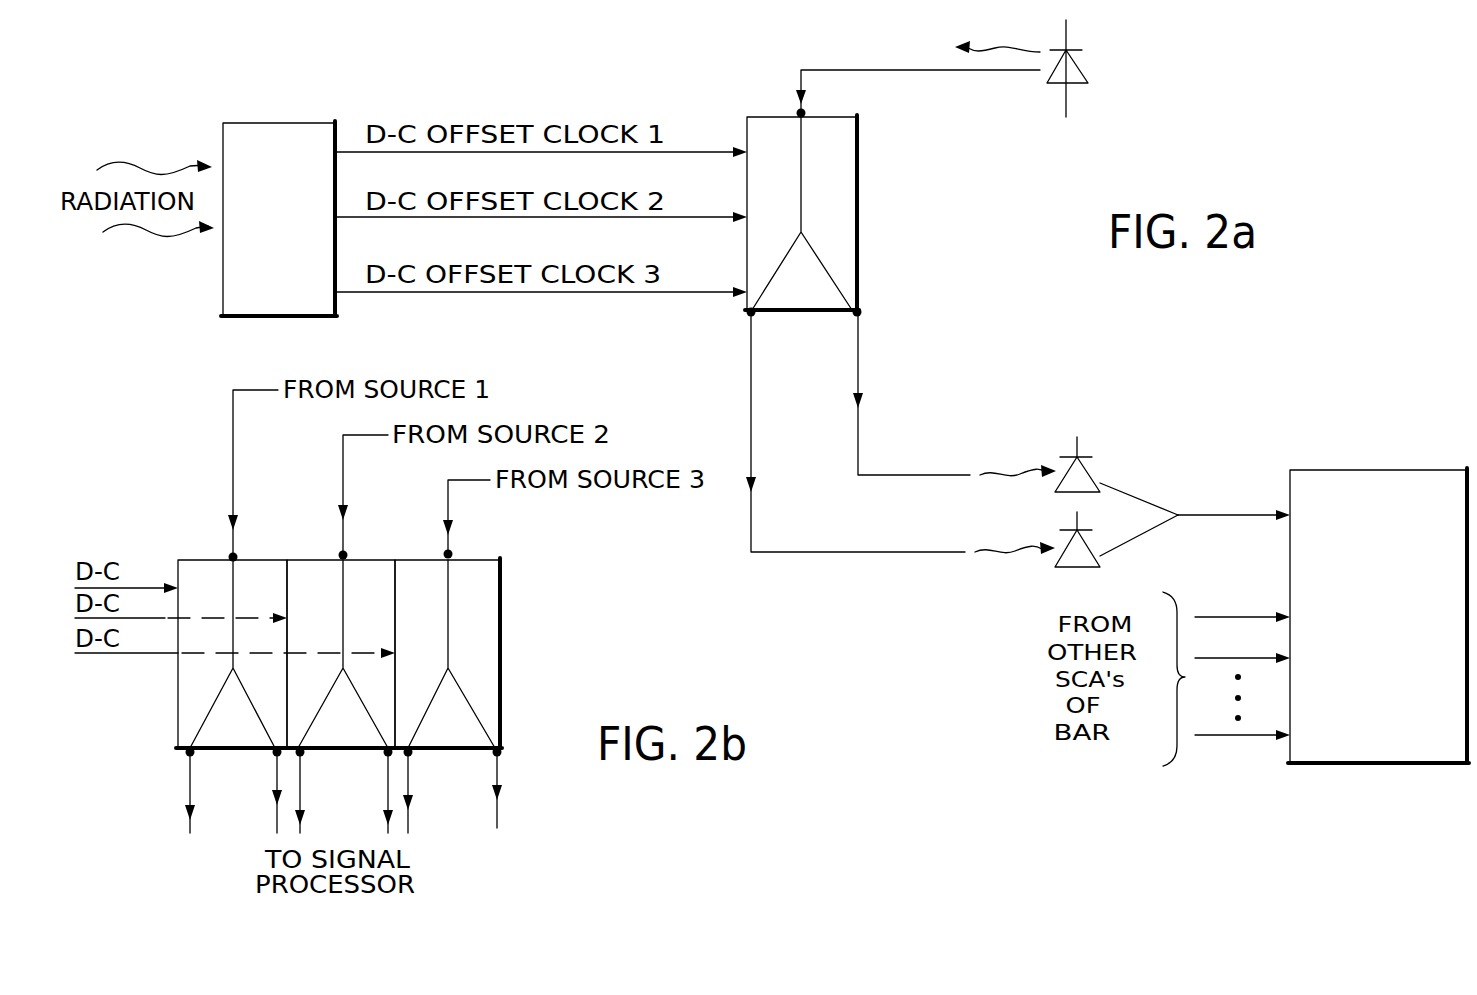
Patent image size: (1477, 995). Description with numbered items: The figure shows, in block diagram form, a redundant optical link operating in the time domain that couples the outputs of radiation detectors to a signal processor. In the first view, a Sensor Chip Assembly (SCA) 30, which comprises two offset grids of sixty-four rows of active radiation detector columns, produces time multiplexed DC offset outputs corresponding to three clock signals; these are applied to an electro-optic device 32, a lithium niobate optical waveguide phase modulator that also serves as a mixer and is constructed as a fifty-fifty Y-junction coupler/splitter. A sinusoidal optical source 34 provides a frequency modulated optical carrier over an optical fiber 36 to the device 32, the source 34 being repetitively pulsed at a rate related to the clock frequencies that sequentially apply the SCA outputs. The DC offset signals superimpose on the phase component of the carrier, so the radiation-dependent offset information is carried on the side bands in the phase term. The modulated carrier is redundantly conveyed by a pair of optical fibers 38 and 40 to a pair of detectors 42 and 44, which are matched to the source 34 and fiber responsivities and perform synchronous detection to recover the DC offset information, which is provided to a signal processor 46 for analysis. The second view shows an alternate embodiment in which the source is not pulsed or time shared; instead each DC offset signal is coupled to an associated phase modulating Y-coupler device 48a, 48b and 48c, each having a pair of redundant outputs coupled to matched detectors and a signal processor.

In FIG. 2a, the Sensor Chip Assembly (SCA) 30 is at (223, 282).
In FIG. 2a, the electro-optic device 32 is at (858, 183).
In FIG. 2a, the sinusoidal optical source 34 is at (1090, 83).
In FIG. 2a, the optical fiber 36 is at (910, 70).
In FIG. 2a, the optical fiber 38 is at (751, 350).
In FIG. 2a, the optical fiber 40 is at (858, 335).
In FIG. 2a, the detector 42 is at (1065, 568).
In FIG. 2a, the detector 44 is at (1068, 451).
In FIG. 2a, the signal processor 46 is at (1378, 468).
In FIG. 2b, the phase modulating Y-coupler device 48a is at (178, 683).
In FIG. 2b, the phase modulating Y-coupler device 48b is at (368, 557).
In FIG. 2b, the phase modulating Y-coupler device 48c is at (500, 675).